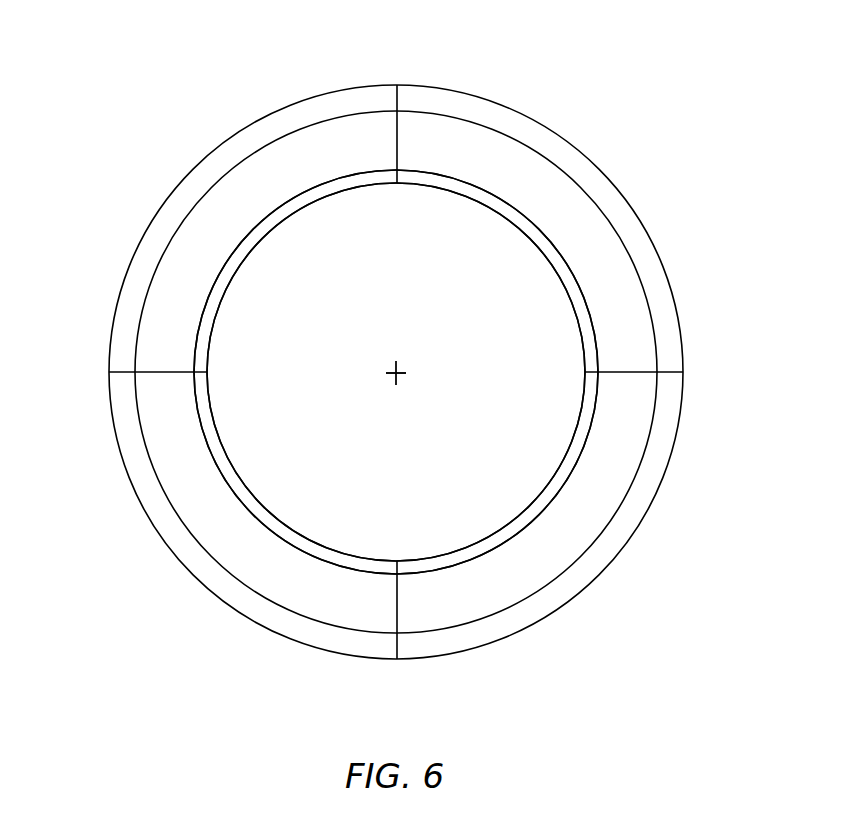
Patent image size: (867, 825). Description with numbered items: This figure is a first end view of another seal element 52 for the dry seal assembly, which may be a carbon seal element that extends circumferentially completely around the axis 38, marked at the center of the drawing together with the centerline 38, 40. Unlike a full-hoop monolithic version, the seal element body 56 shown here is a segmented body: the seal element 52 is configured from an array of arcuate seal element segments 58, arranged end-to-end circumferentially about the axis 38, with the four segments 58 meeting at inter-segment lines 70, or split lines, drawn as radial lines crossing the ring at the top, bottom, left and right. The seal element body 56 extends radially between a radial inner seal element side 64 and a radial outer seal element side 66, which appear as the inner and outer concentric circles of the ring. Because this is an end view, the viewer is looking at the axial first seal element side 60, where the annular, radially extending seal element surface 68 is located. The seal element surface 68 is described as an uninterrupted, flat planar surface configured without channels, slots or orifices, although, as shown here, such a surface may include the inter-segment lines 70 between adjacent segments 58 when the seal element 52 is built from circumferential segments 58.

The seal element 52 is at (651, 107).
The seal element body 56 is at (552, 112).
The radial outer seal element side 66 is at (308, 95).
The axial first seal element side 60 is at (623, 302).
The seal element surface 68 is at (396, 372).
The radial inner seal element side 64 is at (343, 186).
The arcuate seal element segments 58 is at (260, 258).
The inter-segment lines 70 is at (397, 127).
The axis 38 is at (398, 375).
The center line 40 is at (396, 373).